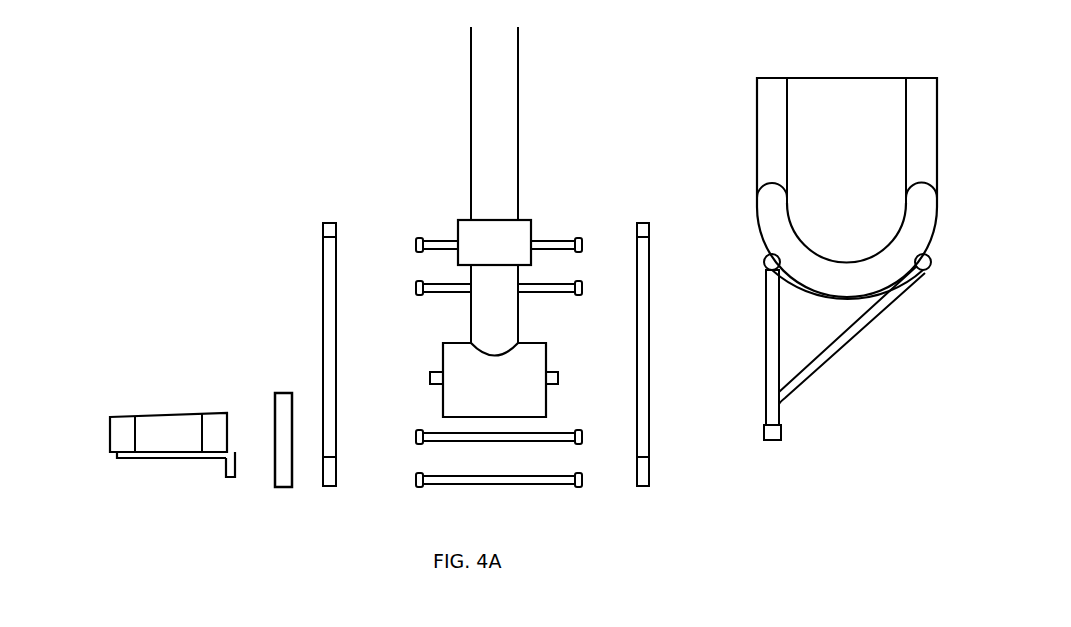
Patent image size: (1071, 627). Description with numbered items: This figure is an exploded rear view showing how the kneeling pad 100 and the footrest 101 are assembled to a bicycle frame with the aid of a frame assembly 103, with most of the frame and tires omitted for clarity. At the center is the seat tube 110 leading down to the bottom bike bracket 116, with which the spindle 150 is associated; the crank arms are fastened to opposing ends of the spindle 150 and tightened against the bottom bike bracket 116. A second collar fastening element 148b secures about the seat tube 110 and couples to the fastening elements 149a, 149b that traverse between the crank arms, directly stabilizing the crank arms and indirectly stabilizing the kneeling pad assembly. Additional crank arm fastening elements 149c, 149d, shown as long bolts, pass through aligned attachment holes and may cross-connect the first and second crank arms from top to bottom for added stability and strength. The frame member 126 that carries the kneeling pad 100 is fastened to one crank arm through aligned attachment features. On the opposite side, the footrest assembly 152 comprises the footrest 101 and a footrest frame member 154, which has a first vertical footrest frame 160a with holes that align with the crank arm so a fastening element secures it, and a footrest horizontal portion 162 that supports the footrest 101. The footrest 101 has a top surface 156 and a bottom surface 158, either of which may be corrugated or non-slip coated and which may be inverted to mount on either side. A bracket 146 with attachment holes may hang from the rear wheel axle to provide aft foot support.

The bicycle frame attachable kneeling pad 100 is at (737, 75).
The footrest 101 is at (205, 395).
The frame assembly 103 is at (272, 168).
The seat tube 110 is at (518, 103).
The bottom bike bracket 116 is at (543, 345).
The frame member 126 is at (858, 380).
The bracket 146 is at (283, 393).
The second collar fastening element 148b is at (532, 220).
The crank arm fastening element 149a is at (418, 237).
The crank arm fastening element 149b is at (420, 285).
The crank arm fastening element 149c is at (418, 430).
The crank arm fastening element 149d is at (416, 477).
The spindle 150 is at (430, 378).
The footrest assembly 152 is at (107, 333).
The footrest frame member 154 is at (90, 540).
The top surface 156 is at (133, 415).
The bottom surface 158 is at (137, 453).
The first vertical footrest frame 160a is at (237, 470).
The footrest horizontal portion 162 is at (175, 460).